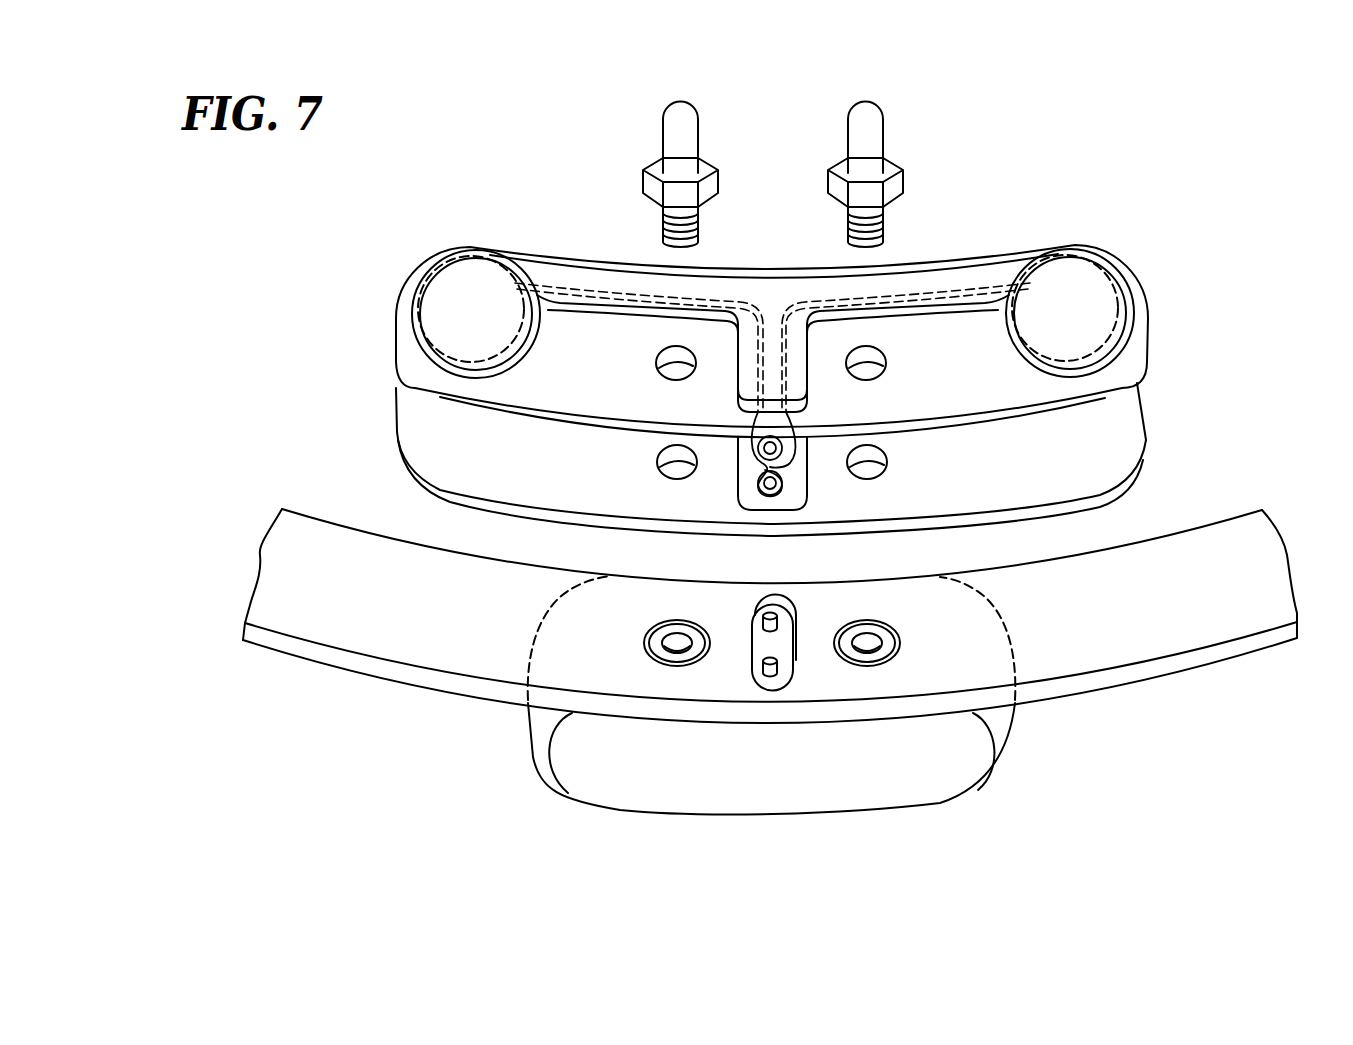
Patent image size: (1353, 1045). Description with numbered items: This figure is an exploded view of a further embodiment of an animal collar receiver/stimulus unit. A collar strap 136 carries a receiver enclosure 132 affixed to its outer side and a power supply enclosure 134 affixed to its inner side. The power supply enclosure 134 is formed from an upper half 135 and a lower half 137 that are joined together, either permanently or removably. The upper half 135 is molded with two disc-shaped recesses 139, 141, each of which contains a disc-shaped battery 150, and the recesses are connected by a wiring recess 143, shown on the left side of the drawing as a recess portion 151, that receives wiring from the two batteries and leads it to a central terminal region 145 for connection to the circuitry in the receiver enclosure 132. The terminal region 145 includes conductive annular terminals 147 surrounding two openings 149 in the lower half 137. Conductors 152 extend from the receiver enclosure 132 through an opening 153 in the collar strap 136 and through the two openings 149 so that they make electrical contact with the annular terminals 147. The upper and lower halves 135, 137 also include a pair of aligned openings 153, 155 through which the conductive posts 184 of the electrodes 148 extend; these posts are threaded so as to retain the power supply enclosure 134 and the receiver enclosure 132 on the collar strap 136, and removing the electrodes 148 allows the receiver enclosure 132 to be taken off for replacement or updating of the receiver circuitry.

The receiver enclosure 132 is at (948, 768).
The power supply enclosure 134 is at (1140, 293).
The upper half 135 is at (1143, 335).
The collar strap 136 is at (1102, 647).
The lower half 137 is at (1122, 437).
The disc-shaped recess 139 is at (478, 278).
The disc-shaped recess 141 is at (1070, 270).
The wiring recess 143 is at (938, 272).
The central terminal region 145 is at (780, 507).
The conductive annular terminals 147 is at (755, 452).
The electrodes 148 is at (853, 128).
The openings 149 is at (787, 464).
The disc-shaped battery 150 is at (412, 288).
The left wire channel 151 is at (624, 300).
The conductors 152 is at (780, 668).
The opening 153 is at (675, 372).
The aligned opening 155 is at (672, 470).
The conductive posts 184 is at (848, 228).